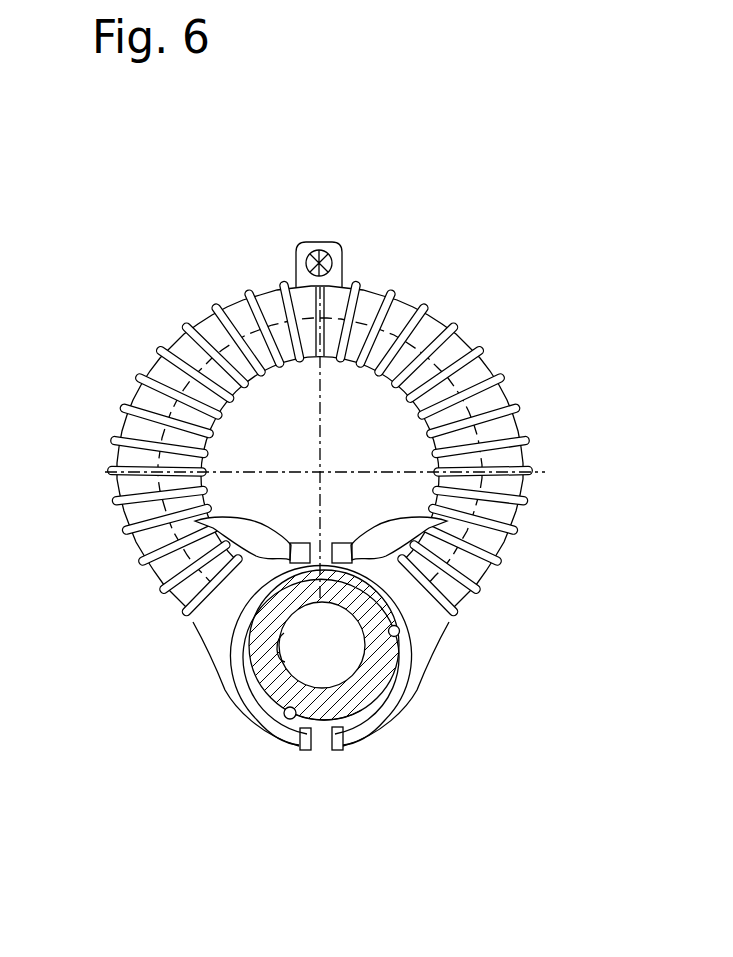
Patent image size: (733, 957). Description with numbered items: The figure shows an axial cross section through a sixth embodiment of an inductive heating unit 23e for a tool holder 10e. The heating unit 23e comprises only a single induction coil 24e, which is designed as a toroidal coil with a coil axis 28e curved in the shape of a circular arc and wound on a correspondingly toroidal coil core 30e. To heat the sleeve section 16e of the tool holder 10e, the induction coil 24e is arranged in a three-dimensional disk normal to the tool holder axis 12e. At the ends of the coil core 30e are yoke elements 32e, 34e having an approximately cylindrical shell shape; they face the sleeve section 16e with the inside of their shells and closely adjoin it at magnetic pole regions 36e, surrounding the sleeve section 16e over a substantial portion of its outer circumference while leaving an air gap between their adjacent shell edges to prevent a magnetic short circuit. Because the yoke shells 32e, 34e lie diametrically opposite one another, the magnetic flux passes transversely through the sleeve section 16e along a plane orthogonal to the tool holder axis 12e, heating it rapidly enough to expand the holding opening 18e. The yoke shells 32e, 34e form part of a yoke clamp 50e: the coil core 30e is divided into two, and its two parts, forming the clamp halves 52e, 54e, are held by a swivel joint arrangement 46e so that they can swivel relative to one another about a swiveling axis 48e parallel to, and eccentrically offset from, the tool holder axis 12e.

The tool holder 10e is at (351, 680).
The tool holder axis 12e is at (323, 647).
The sleeve section 16e is at (343, 700).
The holding opening 18e is at (282, 700).
The heating unit 23e is at (329, 417).
The induction coil 24e is at (520, 407).
The coil axis 28e is at (440, 304).
The coil core 30e is at (475, 370).
The yoke element 32e is at (397, 713).
The yoke element 34e is at (228, 685).
The magnetic pole region 36e is at (393, 641).
The swivel joint arrangement 46e is at (326, 218).
The swiveling axis 48e is at (304, 262).
The yoke clamp 50e is at (322, 624).
The clamp half 52e is at (493, 526).
The clamp half 54e is at (195, 527).